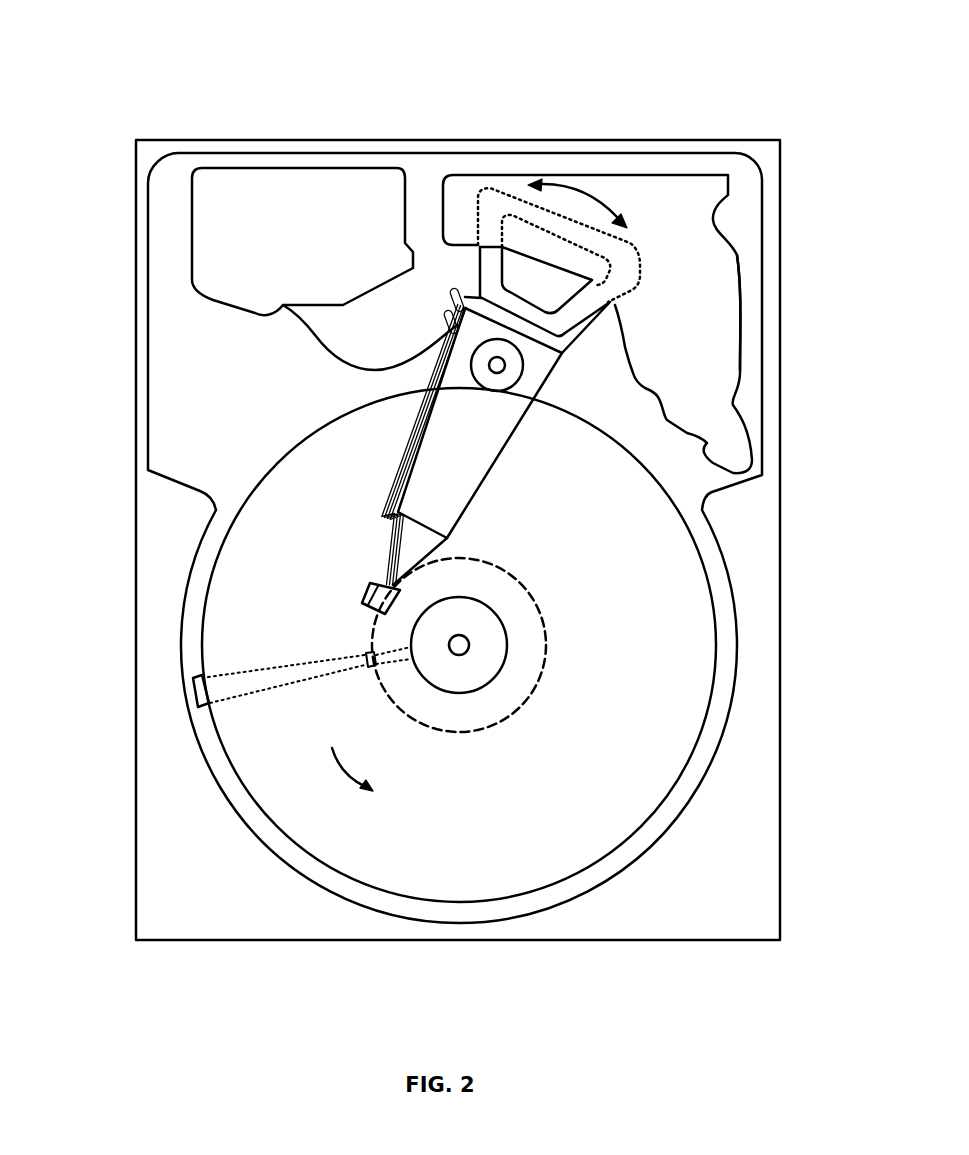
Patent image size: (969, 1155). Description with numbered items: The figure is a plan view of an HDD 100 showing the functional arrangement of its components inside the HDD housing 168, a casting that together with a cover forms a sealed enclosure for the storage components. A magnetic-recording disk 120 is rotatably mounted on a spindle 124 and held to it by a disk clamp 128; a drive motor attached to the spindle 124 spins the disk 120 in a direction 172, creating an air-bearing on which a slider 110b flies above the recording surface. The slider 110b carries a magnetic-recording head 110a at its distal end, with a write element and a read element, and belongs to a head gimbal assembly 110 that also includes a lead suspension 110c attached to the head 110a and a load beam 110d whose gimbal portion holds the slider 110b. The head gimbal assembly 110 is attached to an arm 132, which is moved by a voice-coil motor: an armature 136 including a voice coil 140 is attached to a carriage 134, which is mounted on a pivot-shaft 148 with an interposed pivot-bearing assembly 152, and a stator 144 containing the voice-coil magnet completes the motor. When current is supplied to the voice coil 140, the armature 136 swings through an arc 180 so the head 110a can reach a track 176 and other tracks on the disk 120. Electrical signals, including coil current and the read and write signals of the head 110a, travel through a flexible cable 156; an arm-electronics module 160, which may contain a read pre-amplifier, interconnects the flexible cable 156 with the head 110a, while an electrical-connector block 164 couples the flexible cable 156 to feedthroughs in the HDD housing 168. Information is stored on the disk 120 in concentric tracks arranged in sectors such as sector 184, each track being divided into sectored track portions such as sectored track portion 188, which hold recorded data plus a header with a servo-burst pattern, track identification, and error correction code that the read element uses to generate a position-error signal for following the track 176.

The HDD 100 is at (102, 68).
The head gimbal assembly 110 is at (60, 455).
The magnetic-recording head 110a is at (378, 585).
The slider 110b is at (397, 578).
The lead suspension 110c is at (393, 550).
The load beam 110d is at (385, 522).
The magnetic-recording disk 120 is at (640, 597).
The spindle 124 is at (462, 645).
The disk clamp 128 is at (483, 660).
The arm 132 is at (448, 480).
The carriage 134 is at (517, 397).
The armature 136 is at (477, 282).
The voice coil 140 is at (492, 257).
The stator 144 is at (707, 268).
The pivot-shaft 148 is at (505, 362).
The pivot-bearing assembly 152 is at (510, 378).
The flexible cable 156 is at (317, 343).
The arm-electronics module 160 is at (452, 333).
The electrical-connector block 164 is at (217, 240).
The HDD housing 168 is at (762, 153).
The direction 172 is at (376, 762).
The track 176 is at (540, 600).
The arc 180 is at (586, 180).
The sector 184 is at (193, 690).
The sectored track portion 188 is at (365, 656).